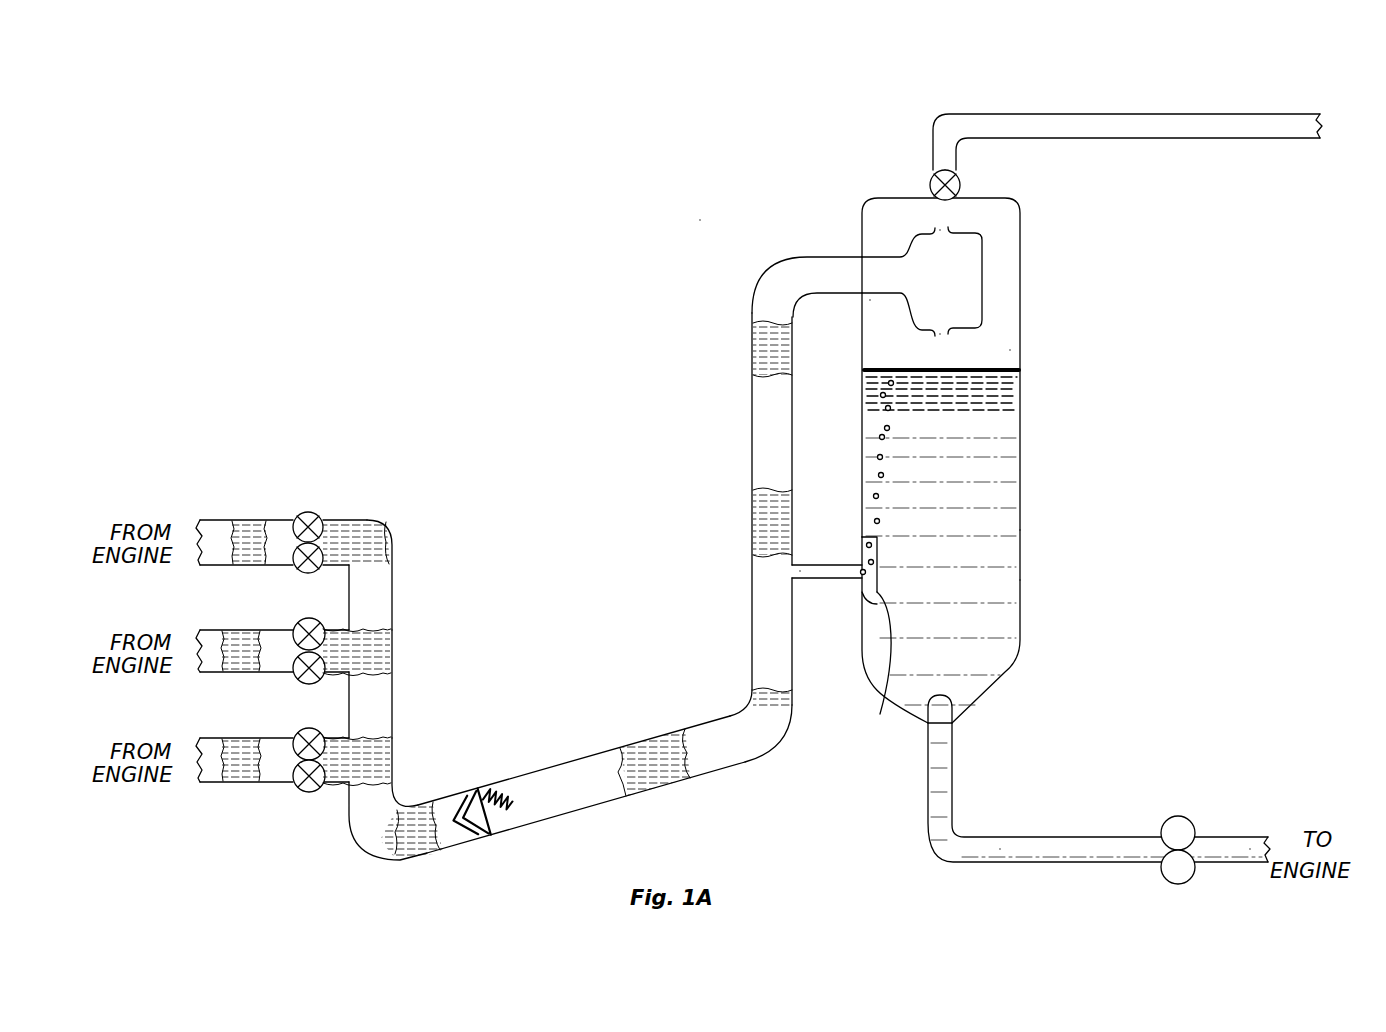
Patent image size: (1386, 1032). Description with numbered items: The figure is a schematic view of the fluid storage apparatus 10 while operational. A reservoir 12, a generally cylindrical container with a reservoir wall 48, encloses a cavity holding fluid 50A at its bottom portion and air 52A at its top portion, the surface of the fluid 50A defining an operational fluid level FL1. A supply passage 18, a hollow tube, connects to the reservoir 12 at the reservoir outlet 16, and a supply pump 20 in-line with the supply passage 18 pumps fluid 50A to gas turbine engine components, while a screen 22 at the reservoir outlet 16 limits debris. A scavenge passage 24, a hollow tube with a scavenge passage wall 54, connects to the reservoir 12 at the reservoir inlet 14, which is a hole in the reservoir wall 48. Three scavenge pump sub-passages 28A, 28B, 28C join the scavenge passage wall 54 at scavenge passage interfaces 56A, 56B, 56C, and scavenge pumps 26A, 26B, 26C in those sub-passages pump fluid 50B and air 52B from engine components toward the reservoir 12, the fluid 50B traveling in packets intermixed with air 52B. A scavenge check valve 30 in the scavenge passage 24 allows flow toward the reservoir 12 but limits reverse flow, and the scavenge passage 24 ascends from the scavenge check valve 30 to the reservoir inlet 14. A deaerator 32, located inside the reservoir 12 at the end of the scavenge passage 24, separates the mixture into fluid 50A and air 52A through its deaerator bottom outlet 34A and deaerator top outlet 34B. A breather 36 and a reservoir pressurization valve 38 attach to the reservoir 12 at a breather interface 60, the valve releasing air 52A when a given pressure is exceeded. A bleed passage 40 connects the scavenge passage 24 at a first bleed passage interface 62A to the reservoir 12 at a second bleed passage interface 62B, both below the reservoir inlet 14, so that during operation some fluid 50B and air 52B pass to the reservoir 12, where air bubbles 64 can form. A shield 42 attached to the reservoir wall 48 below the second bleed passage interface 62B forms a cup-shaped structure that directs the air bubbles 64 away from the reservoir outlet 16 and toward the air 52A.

The fluid storage apparatus 10 is at (698, 216).
The reservoir 12 is at (1032, 291).
The reservoir inlet 14 is at (858, 256).
The reservoir outlet 16 is at (937, 725).
The supply passage 18 is at (1101, 832).
The supply pump 20 is at (1174, 812).
The screen 22 is at (938, 692).
The scavenge passage 24 is at (600, 748).
The scavenge pump 26A is at (308, 506).
The scavenge pump 26B is at (308, 615).
The scavenge pump 26C is at (308, 724).
The scavenge pump sub-passage 28A is at (208, 520).
The scavenge pump sub-passage 28B is at (208, 630).
The scavenge pump sub-passage 28C is at (208, 738).
The scavenge check valve 30 is at (506, 786).
The deaerator 32 is at (900, 242).
The deaerator bottom outlet 34A is at (950, 327).
The deaerator top outlet 34B is at (947, 226).
The breather 36 is at (1133, 107).
The reservoir pressurization valve 38 is at (925, 178).
The bleed passage 40 is at (823, 586).
The shield 42 is at (874, 669).
The reservoir wall 48 is at (1022, 560).
The fluid 50A is at (978, 497).
The fluid 50B is at (772, 352).
The air 52A is at (1008, 315).
The air 52B is at (772, 435).
The scavenge passage wall 54 is at (706, 720).
The scavenge passage interface 56A is at (347, 520).
The scavenge passage interface 56B is at (345, 628).
The scavenge passage interface 56C is at (350, 735).
The breather interface 60 is at (958, 173).
The first bleed passage interface 62A is at (790, 568).
The second bleed passage interface 62B is at (862, 562).
The air bubbles 64 is at (887, 408).
The operational fluid level FL1 is at (980, 368).